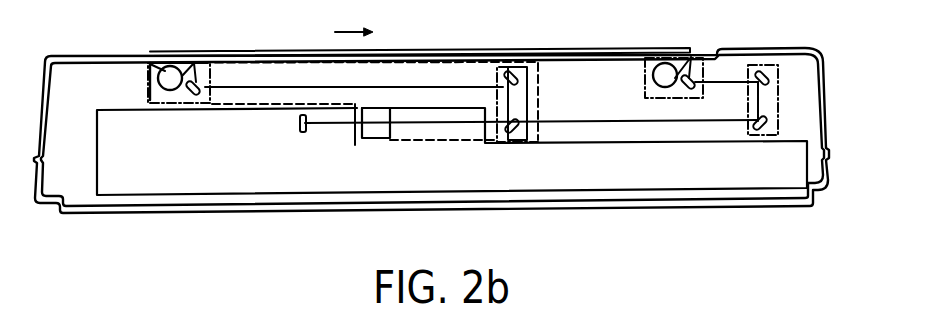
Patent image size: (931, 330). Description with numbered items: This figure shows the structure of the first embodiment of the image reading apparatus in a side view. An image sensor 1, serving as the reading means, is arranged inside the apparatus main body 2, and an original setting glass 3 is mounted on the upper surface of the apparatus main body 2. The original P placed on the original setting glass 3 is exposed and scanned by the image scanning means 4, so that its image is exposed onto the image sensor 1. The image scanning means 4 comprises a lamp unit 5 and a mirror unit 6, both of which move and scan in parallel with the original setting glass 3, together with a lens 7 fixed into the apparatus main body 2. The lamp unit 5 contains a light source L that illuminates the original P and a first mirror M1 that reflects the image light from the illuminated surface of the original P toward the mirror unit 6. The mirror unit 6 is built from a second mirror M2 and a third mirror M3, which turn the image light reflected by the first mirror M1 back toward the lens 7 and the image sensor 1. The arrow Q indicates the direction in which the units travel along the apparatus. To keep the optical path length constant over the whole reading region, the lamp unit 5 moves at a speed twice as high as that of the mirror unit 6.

The apparatus main body 2 is at (789, 48).
The original setting glass 3 is at (608, 52).
The light source L is at (165, 77).
The lamp unit 5 is at (156, 62).
The first mirror M1 is at (197, 81).
The image sensor 1 is at (302, 113).
The scanning direction Q is at (366, 33).
The image scanning means 4 is at (543, 72).
The mirror unit 6 is at (521, 67).
The second mirror M2 is at (510, 72).
The third mirror M3 is at (505, 133).
The original P is at (661, 55).
The lens 7 is at (368, 136).